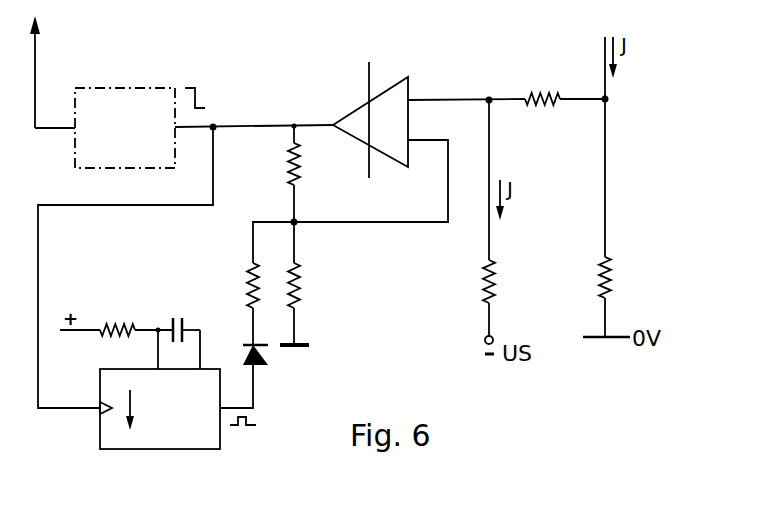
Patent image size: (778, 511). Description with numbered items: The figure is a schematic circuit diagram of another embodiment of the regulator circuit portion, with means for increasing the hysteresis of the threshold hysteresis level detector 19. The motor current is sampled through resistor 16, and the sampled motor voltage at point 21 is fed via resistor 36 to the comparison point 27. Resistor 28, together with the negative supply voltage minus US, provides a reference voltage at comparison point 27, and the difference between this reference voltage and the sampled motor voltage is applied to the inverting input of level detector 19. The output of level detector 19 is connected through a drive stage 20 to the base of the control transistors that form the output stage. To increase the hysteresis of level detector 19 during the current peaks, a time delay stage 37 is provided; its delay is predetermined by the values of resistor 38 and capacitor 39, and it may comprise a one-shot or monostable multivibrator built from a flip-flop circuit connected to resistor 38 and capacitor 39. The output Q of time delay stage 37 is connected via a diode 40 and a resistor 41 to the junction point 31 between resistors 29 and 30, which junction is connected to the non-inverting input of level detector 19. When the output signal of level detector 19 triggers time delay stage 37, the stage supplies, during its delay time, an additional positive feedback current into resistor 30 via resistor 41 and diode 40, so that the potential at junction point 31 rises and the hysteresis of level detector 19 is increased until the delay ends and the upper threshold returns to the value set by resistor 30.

The resistor 16 is at (611, 283).
The level detector 19 is at (404, 120).
The drive stage 20 is at (125, 128).
The point 21 is at (609, 101).
The comparison point 27 is at (487, 96).
The resistor 28 is at (496, 288).
The resistor 29 is at (301, 165).
The resistor 30 is at (301, 283).
The junction point 31 is at (296, 219).
The resistor 36 is at (548, 92).
The time delay stage 37 is at (100, 436).
The resistor 38 is at (130, 322).
The capacitor 39 is at (188, 322).
The diode 40 is at (247, 345).
The resistor 41 is at (248, 277).